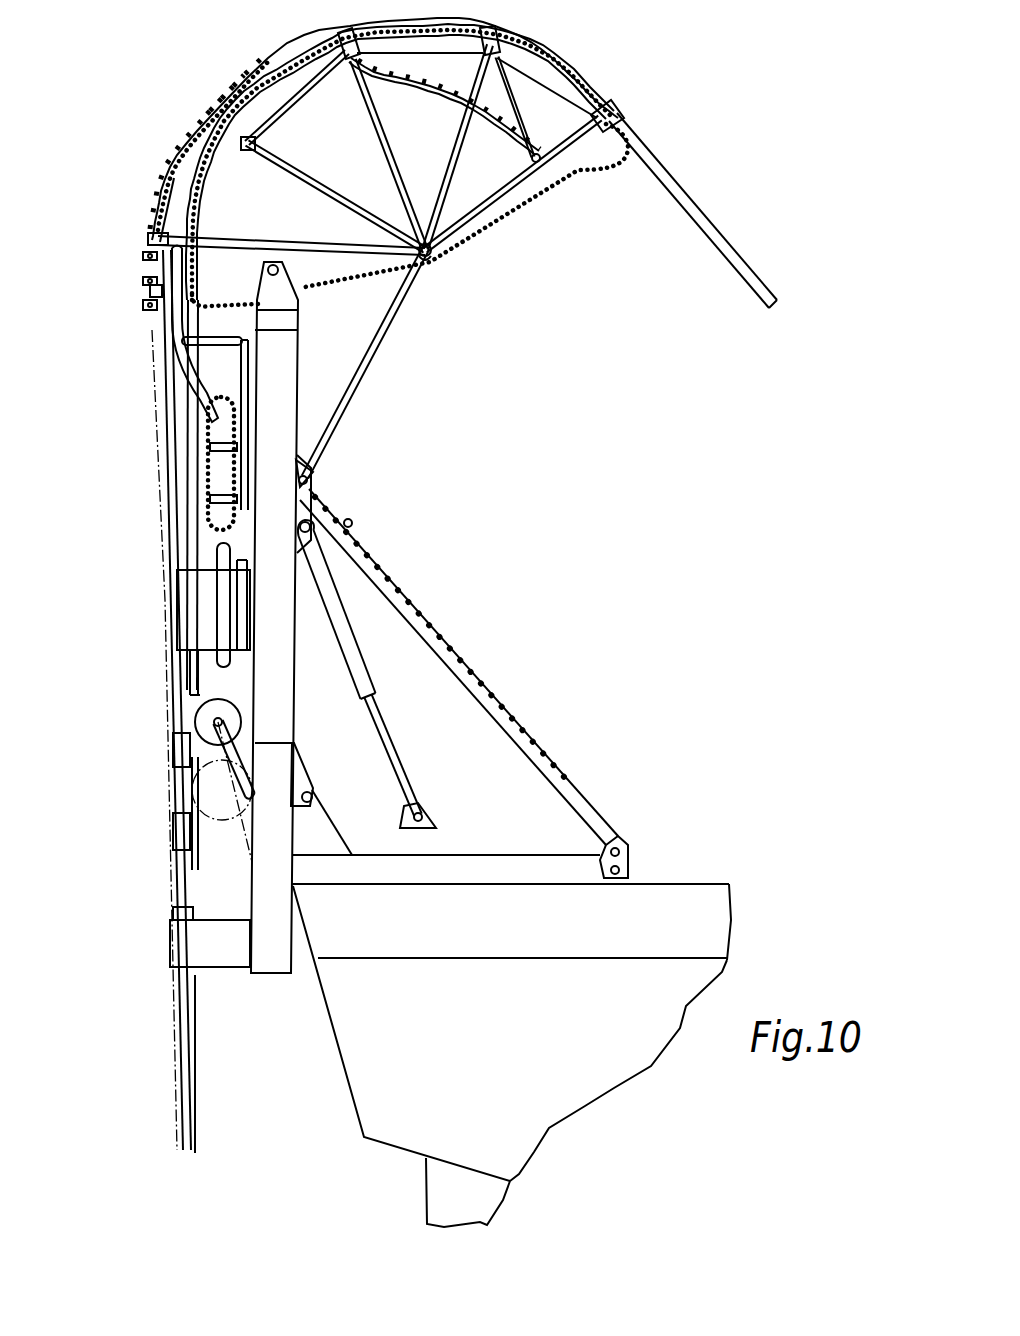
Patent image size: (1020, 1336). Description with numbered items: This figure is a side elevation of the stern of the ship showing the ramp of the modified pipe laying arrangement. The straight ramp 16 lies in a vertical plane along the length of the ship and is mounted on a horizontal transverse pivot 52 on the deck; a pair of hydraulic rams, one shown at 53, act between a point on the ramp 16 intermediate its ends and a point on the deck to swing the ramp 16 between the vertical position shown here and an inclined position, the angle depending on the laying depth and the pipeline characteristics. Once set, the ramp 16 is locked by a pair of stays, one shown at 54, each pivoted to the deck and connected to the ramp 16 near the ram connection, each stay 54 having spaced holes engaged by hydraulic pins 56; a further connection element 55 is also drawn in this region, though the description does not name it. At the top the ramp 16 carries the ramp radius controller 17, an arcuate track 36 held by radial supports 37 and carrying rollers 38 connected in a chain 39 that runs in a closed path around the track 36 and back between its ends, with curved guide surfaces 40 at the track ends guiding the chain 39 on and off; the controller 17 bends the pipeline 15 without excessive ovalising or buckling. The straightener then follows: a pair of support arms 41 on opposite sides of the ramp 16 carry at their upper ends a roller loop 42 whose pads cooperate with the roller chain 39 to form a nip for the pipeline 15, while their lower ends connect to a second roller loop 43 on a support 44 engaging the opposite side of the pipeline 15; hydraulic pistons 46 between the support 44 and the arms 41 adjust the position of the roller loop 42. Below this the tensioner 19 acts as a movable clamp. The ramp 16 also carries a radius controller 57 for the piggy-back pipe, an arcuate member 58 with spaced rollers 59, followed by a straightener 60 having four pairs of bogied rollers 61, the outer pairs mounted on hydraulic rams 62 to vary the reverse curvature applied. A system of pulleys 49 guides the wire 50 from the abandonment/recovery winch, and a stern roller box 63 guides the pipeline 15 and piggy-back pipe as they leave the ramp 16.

The pipeline 15 is at (557, 60).
The ramp 16 is at (297, 668).
The ramp radius controller 17 is at (318, 56).
The tensioner 19 is at (183, 600).
The arcuate track 36 is at (572, 92).
The radial supports 37 is at (395, 158).
The rollers 38 is at (365, 363).
The chain 39 is at (440, 257).
The curved guide surfaces 40 is at (260, 306).
The support arms 41 is at (178, 352).
The roller loop 42 is at (146, 237).
The second roller loop 43 is at (236, 412).
The support 44 is at (250, 377).
The hydraulic pistons 46 is at (244, 342).
The pulleys 49 is at (205, 720).
The wire 50 is at (196, 693).
The horizontal transverse pivot 52 is at (311, 792).
The hydraulic rams 53 is at (365, 678).
The stays 54 is at (388, 567).
The pin 55 is at (352, 522).
The hydraulic pins 56 is at (330, 470).
The radius controller 57 is at (224, 90).
The arcuate member 58 is at (165, 163).
The spaced rollers 59 is at (197, 124).
The straightener 60 is at (135, 290).
The bogied rollers 61 is at (143, 256).
The hydraulic rams 62 is at (143, 305).
The stern roller box 63 is at (182, 912).